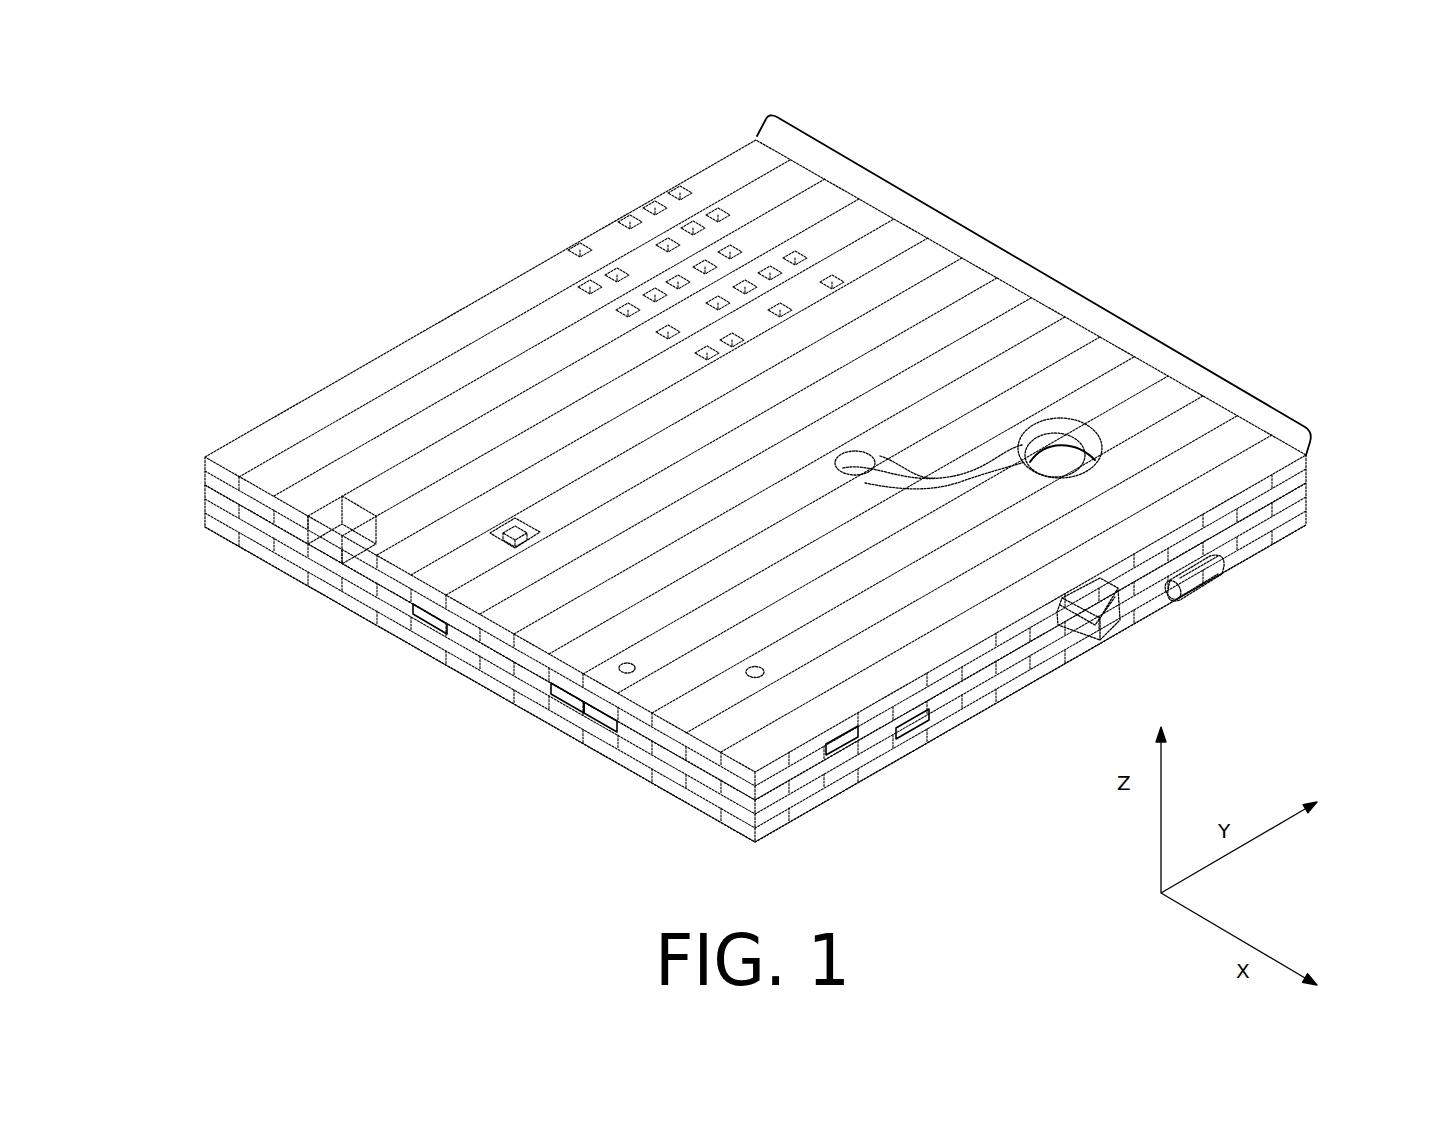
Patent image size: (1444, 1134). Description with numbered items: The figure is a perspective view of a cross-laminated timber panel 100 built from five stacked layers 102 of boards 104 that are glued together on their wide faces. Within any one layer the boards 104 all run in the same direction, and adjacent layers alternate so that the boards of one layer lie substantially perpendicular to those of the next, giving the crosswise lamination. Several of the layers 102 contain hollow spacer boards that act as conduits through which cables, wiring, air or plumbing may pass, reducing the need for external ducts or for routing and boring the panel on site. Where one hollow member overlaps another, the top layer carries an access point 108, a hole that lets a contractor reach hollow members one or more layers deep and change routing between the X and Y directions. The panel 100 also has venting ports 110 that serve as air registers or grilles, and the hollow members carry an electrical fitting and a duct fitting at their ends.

The cross-laminated timber panel 100 is at (1284, 102).
The layers 102 is at (1310, 455).
The boards 104 is at (1040, 286).
The access point 108 is at (335, 556).
The venting port 110 is at (600, 203).